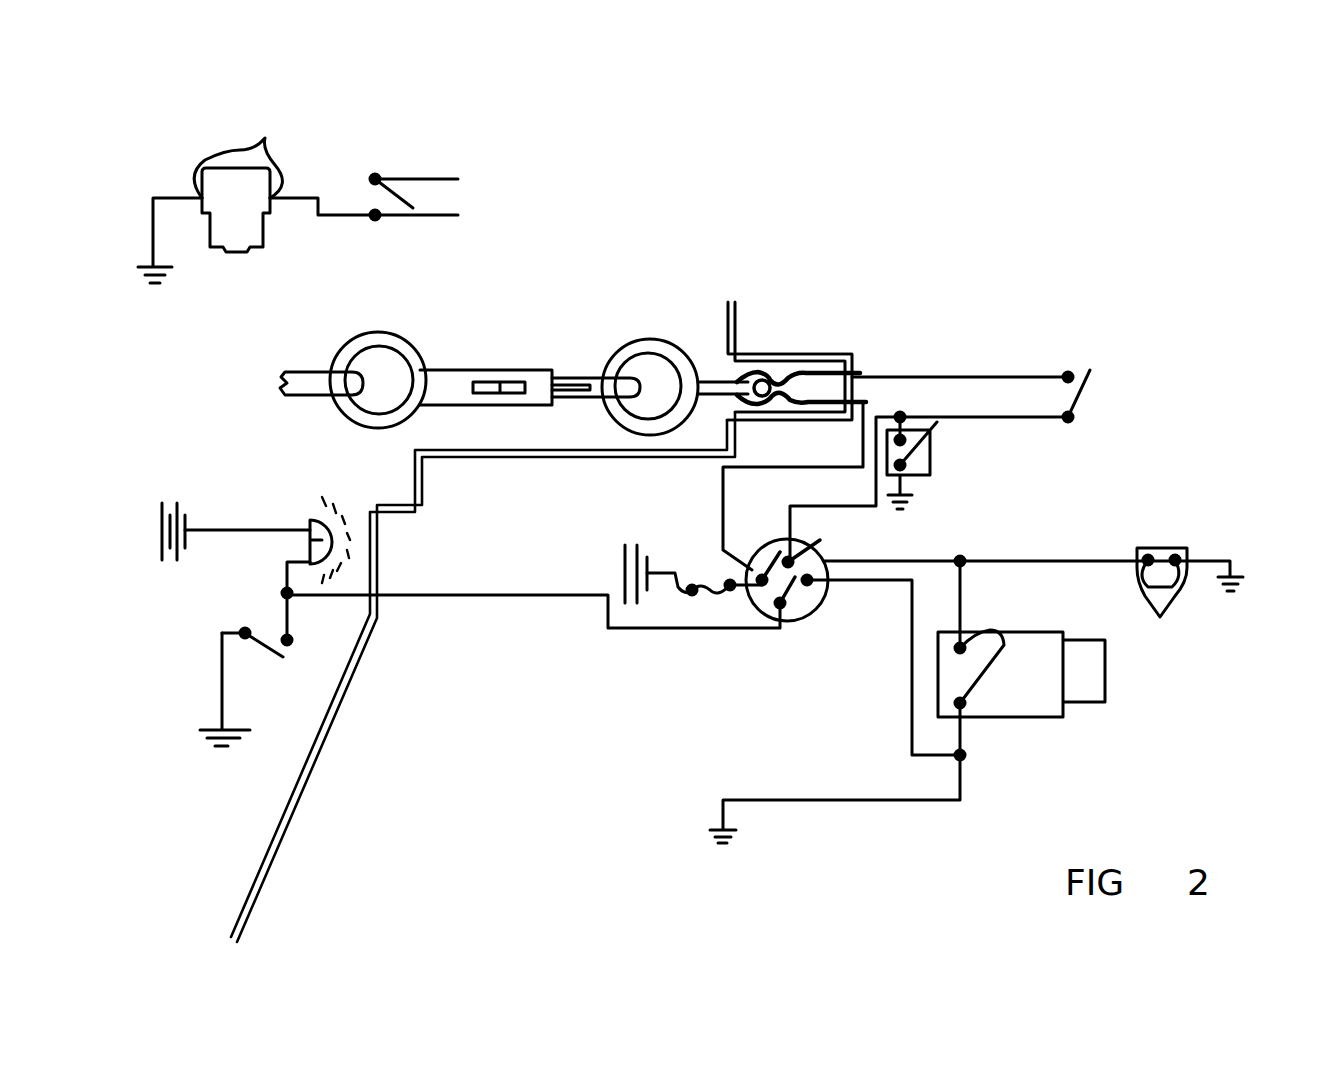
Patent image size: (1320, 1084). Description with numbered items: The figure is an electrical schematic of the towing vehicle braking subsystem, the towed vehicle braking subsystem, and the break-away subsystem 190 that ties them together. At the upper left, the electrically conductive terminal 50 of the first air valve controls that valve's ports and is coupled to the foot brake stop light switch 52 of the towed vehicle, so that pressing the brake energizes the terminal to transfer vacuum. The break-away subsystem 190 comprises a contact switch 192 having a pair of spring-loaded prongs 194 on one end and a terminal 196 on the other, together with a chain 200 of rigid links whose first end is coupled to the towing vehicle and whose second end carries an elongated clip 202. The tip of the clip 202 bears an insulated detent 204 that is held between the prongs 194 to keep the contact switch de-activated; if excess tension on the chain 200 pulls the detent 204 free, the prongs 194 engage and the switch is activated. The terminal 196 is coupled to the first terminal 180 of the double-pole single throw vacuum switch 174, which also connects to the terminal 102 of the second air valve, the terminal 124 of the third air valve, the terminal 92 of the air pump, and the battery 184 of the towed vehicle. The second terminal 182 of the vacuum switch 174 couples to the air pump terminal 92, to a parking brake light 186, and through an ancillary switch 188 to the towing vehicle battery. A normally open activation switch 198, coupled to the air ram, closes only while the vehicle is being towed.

The electrically conductive terminal 50 is at (247, 172).
The foot brake stop light switch 52 is at (423, 179).
The electrically conductive terminal 92 is at (1007, 633).
The electrically conductive terminal 102 is at (1174, 606).
The electrically conductive terminal 124 is at (947, 410).
The vacuum switch 174 is at (762, 555).
The first terminal 180 is at (807, 547).
The second terminal 182 is at (795, 618).
The battery 184 is at (620, 560).
The parking brake light 186 is at (300, 525).
The ancillary switch 188 is at (263, 645).
The break-away subsystem 190 is at (912, 272).
The contact switch 192 is at (823, 367).
The spring-loaded prongs 194 is at (775, 367).
The terminal 196 is at (880, 373).
The activation switch 198 is at (1083, 387).
The chain 200 is at (313, 383).
The clip 202 is at (457, 372).
The insulated detent 204 is at (757, 372).